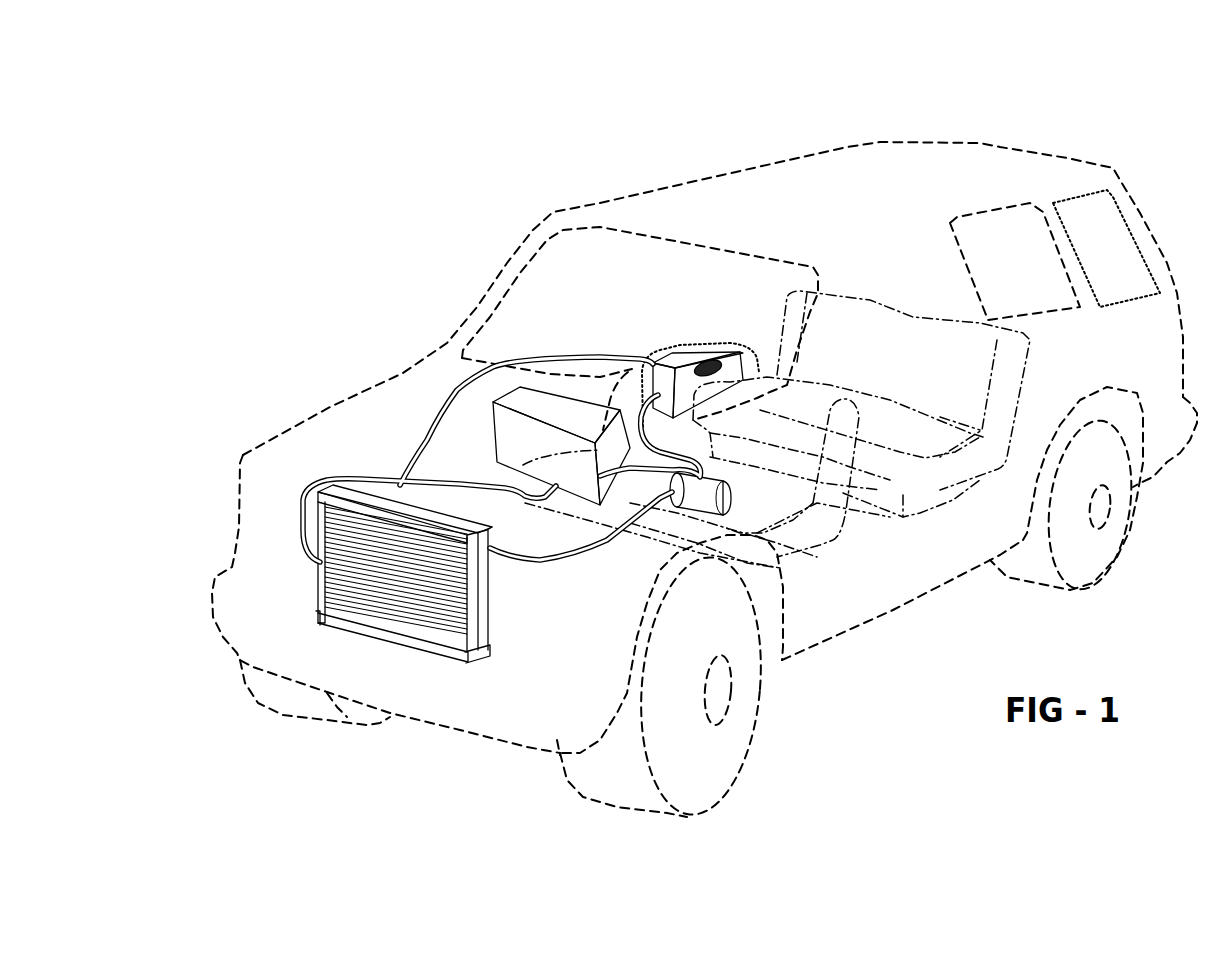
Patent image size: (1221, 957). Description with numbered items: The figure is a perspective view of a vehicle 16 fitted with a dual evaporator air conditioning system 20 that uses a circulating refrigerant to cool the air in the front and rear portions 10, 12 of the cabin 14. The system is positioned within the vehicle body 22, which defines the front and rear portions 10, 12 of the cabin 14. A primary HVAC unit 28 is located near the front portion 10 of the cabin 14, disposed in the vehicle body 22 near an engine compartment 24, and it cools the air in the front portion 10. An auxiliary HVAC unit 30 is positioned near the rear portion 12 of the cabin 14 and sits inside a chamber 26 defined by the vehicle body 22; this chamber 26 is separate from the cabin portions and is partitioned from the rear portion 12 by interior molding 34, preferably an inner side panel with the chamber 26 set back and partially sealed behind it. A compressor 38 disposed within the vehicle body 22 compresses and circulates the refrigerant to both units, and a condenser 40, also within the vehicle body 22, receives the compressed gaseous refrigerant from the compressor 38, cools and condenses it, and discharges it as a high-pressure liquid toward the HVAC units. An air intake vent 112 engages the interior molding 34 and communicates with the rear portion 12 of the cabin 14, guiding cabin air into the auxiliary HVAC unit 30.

The front portion 10 is at (634, 386).
The rear portion 12 is at (927, 372).
The cabin 14 is at (948, 548).
The vehicle 16 is at (680, 132).
The dual evaporator air conditioning system 20 is at (330, 454).
The vehicle body 22 is at (977, 557).
The engine compartment 24 is at (512, 587).
The chamber 26 is at (750, 362).
The primary HVAC unit 28 is at (507, 447).
The auxiliary HVAC unit 30 is at (703, 353).
The interior molding 34 is at (727, 349).
The compressor 38 is at (730, 498).
The condenser 40 is at (482, 622).
The air intake vent 112 is at (700, 360).